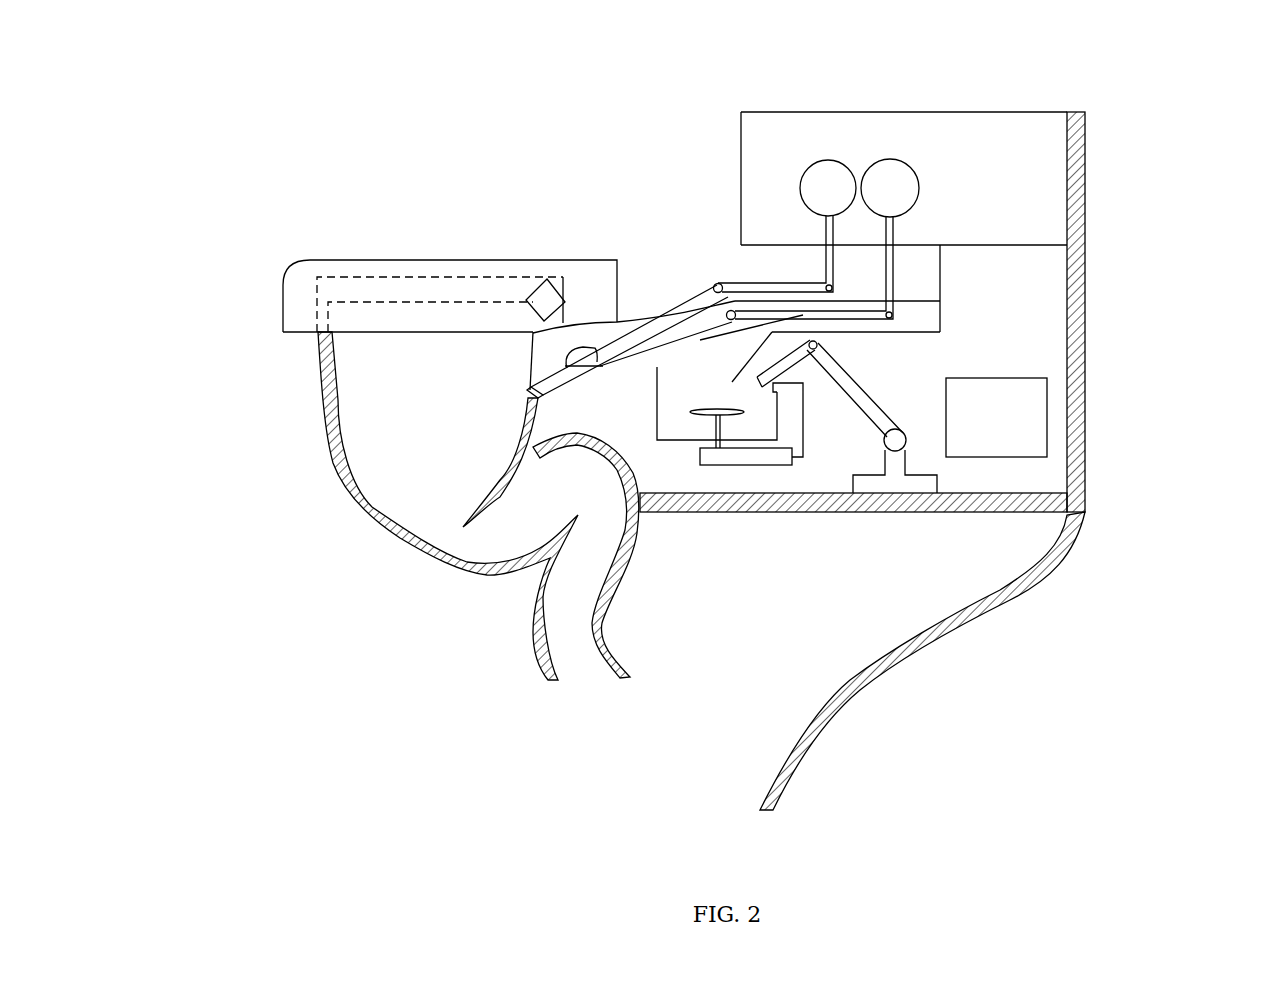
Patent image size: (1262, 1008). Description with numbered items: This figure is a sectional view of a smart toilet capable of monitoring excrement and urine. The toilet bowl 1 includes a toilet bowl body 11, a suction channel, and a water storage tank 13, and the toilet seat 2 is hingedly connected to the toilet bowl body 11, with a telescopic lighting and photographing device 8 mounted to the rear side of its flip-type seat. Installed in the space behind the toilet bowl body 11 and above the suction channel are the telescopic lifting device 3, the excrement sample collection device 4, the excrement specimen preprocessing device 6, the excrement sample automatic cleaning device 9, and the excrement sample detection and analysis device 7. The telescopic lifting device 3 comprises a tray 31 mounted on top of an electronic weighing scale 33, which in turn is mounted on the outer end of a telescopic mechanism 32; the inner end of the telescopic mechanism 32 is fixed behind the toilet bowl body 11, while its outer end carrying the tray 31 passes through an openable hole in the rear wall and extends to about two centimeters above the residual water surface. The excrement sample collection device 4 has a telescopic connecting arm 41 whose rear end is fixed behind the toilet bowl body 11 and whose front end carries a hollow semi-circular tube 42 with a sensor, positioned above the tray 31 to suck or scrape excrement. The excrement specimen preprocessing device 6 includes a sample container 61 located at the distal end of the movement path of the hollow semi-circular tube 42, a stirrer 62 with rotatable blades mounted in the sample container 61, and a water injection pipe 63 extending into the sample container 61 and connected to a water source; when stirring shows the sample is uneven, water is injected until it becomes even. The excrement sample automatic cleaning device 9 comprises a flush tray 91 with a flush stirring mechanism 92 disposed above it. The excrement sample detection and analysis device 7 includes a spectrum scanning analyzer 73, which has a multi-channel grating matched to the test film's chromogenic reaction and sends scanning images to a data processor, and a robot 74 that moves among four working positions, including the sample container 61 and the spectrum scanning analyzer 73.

The toilet bowl 1 is at (1190, 490).
The toilet bowl body 11 is at (1090, 532).
The water storage tank 13 is at (1045, 283).
The toilet seat 2 is at (307, 298).
The telescopic lighting and photographing device 8 is at (552, 278).
The telescopic lifting device 3 is at (197, 375).
The tray 31 is at (566, 363).
The telescopic mechanism 32 is at (700, 340).
The electronic weighing scale 33 is at (533, 333).
The excrement sample collection device 4 is at (587, 168).
The telescopic connecting arm 41 is at (753, 287).
The hollow semi-circular tube 42 is at (657, 313).
The excrement sample automatic cleaning device 9 is at (857, 50).
The flush tray 91 is at (920, 332).
The flush stirring mechanism 92 is at (850, 300).
The excrement specimen preprocessing device 6 is at (927, 755).
The sample container 61 is at (672, 413).
The stirrer 62 is at (726, 413).
The water injection pipe 63 is at (788, 385).
The excrement sample detection and analysis device 7 is at (947, 737).
The spectrum scanning analyzer 73 is at (978, 440).
The robot 74 is at (897, 443).